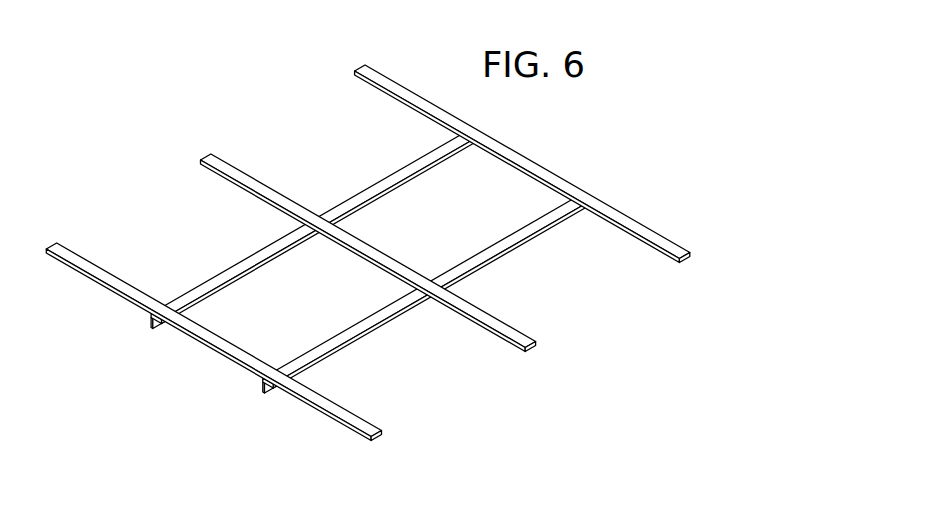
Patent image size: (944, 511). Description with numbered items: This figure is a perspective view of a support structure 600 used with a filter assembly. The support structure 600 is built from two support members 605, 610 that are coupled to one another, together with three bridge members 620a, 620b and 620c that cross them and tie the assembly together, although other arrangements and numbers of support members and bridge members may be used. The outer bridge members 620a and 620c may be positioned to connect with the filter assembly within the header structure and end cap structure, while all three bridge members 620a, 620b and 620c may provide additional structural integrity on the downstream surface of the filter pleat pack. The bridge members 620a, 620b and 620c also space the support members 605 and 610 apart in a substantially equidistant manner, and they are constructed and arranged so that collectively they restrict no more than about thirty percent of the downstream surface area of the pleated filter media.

The support structure 600 is at (268, 97).
The support member 605 is at (505, 235).
The support member 610 is at (210, 273).
The bridge member 620a is at (367, 417).
The bridge member 620b is at (513, 323).
The bridge member 620c is at (638, 223).